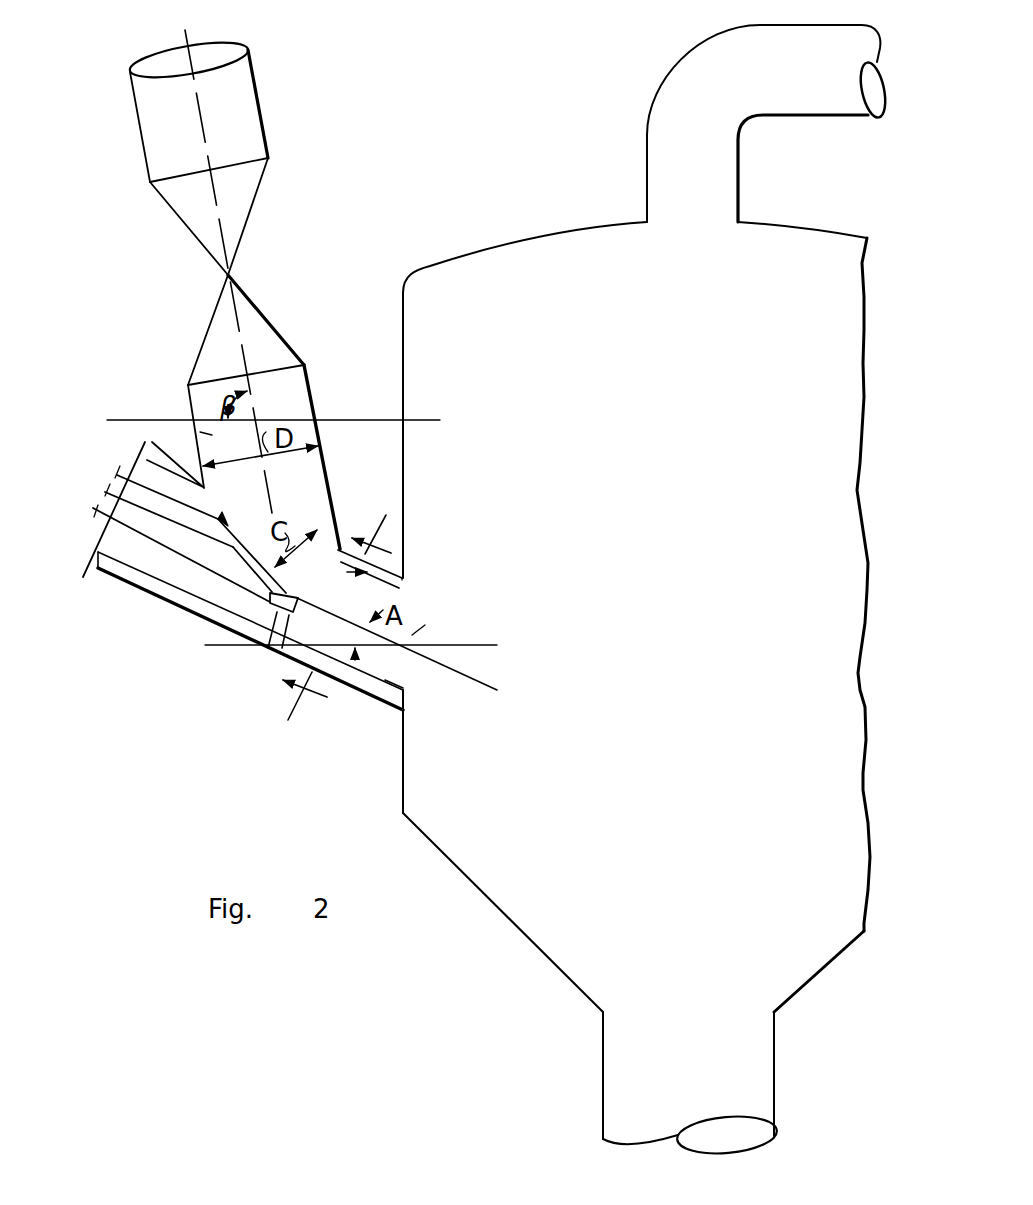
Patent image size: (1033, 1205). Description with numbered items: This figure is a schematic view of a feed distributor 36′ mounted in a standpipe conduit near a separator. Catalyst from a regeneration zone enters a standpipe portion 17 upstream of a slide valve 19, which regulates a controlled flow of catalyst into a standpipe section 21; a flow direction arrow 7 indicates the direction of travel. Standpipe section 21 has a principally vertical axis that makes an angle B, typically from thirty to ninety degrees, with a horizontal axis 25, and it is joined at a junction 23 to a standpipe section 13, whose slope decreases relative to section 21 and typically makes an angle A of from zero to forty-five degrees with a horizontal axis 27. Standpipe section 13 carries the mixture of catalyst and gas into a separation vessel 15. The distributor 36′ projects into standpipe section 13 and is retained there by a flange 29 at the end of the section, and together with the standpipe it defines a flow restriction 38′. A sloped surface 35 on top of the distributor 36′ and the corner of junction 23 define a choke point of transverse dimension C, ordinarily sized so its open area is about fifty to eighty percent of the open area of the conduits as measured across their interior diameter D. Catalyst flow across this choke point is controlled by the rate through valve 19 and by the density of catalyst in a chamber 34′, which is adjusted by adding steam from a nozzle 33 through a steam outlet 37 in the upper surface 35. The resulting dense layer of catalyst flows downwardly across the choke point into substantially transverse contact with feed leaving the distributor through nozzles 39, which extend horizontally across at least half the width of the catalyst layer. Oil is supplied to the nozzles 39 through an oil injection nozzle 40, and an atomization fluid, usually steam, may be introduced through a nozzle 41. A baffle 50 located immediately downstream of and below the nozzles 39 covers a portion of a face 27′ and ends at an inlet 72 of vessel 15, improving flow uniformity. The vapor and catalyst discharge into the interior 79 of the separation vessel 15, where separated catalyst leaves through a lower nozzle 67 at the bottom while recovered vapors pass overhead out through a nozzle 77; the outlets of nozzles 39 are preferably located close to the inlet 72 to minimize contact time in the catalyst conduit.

The flow direction arrow 7 is at (342, 621).
The standpipe section 13 is at (358, 690).
The separation vessel 15 is at (402, 770).
The standpipe portion 17 is at (257, 78).
The slide valve 19 is at (252, 208).
The standpipe section 21 is at (310, 383).
The junction 23 is at (343, 545).
The horizontal axis 25 is at (440, 420).
The horizontal axis 27 is at (504, 630).
The face 27′ is at (297, 618).
The flange 29 is at (85, 578).
The nozzle 33 is at (118, 460).
The chamber 34′ is at (212, 435).
The sloped surface 35 is at (293, 578).
The distributor 36′ is at (130, 557).
The steam outlet 37 is at (224, 521).
The flow restriction 38′ is at (399, 588).
The nozzles 39 is at (262, 645).
The oil injection nozzle 40 is at (100, 512).
The nozzle 41 is at (105, 496).
The baffle 50 is at (390, 683).
The lower nozzle 67 is at (774, 1068).
The inlet 72 is at (412, 635).
The nozzle 77 is at (850, 117).
The interior 79 is at (636, 617).